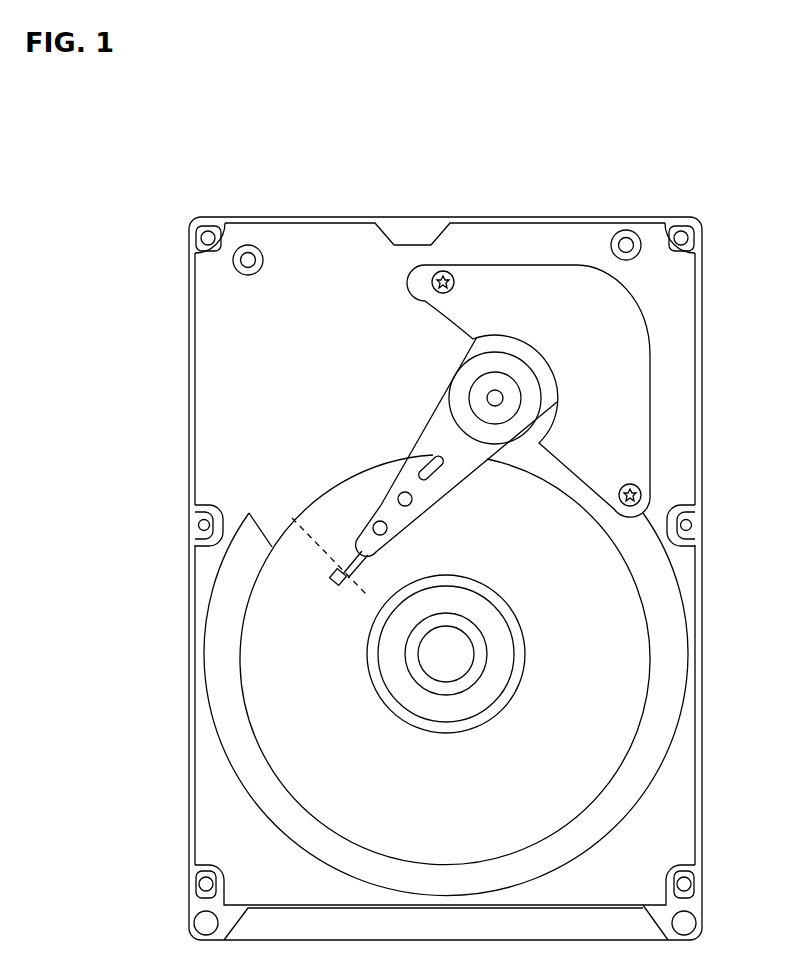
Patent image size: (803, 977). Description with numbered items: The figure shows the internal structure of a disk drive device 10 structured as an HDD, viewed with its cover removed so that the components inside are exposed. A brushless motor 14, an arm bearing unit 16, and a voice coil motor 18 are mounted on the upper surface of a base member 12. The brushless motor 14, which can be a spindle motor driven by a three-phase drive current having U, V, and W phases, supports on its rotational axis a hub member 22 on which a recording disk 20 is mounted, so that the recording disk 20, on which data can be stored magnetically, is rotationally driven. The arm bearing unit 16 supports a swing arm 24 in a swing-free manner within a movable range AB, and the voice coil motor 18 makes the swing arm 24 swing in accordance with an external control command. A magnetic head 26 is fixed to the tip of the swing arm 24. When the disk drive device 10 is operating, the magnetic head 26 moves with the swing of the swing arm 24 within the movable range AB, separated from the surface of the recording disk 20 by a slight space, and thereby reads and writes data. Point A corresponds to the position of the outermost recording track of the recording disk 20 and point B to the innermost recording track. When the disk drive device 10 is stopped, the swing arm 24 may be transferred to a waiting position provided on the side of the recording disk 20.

The disk drive device 10 is at (556, 177).
The base member 12 is at (703, 318).
The brushless motor 14 is at (512, 624).
The arm bearing unit 16 is at (545, 400).
The voice coil motor 18 is at (620, 297).
The recording disk 20 is at (620, 686).
The hub member 22 is at (487, 685).
The swing arm 24 is at (436, 438).
The magnetic head 26 is at (335, 583).